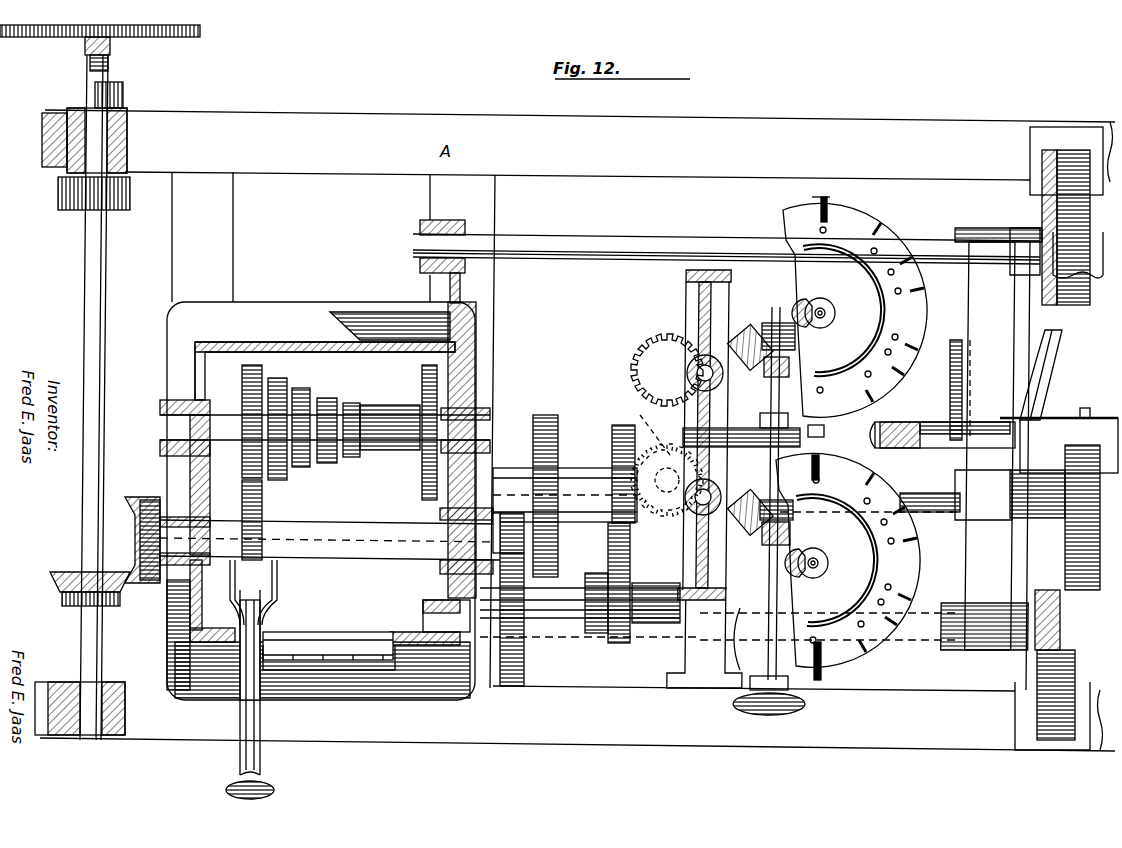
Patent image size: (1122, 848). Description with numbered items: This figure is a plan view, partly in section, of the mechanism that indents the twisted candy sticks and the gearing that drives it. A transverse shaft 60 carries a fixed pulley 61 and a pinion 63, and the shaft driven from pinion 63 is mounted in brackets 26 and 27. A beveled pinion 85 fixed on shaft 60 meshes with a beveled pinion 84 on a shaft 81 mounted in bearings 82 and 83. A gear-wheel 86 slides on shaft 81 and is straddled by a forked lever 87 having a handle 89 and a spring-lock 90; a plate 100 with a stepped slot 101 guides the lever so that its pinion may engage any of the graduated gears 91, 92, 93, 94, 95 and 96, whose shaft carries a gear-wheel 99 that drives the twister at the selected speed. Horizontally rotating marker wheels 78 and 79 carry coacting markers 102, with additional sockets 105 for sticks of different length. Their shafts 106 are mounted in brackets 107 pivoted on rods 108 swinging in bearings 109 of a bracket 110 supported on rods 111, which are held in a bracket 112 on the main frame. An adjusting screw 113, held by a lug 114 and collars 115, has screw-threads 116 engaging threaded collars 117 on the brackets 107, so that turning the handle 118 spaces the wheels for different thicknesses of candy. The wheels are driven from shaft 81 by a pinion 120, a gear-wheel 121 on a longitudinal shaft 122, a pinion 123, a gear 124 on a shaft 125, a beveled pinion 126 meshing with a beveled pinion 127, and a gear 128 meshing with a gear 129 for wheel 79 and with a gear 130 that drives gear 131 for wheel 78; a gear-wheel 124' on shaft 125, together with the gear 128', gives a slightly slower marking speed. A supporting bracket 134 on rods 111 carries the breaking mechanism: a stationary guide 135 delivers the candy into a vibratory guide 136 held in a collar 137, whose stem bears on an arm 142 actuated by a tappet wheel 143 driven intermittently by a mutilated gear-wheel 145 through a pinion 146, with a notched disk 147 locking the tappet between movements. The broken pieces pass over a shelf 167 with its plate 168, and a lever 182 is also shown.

The bracket 26 is at (127, 133).
The bracket 27 is at (125, 712).
The transverse shaft 60 is at (84, 330).
The fixed pulley 61 is at (160, 37).
The pinion 63 is at (60, 195).
The marker wheel 78 is at (855, 310).
The marker wheel 79 is at (543, 501).
The shaft 81 is at (355, 545).
The bearing 82 is at (440, 568).
The bearing 83 is at (178, 515).
The beveled pinion 84 is at (148, 497).
The beveled pinion 85 is at (118, 600).
The gear-wheel 86 is at (255, 520).
The lever 87 is at (277, 595).
The handle 89 is at (260, 722).
The spring-lock 90 is at (266, 782).
The gear 91 is at (390, 420).
The gear 92 is at (360, 406).
The gear 93 is at (335, 400).
The gear 94 is at (308, 390).
The gear 95 is at (285, 380).
The gear 96 is at (262, 370).
The gear-wheel 99 is at (425, 470).
The plate 100 is at (393, 667).
The stepped slot 101 is at (330, 655).
The markers 102 is at (830, 200).
The additional sockets 105 is at (885, 235).
The shafts 106 is at (835, 316).
The brackets 107 is at (822, 308).
The rods 108 is at (692, 370).
The bearings 109 is at (698, 380).
The bracket 110 is at (690, 296).
The rods 111 is at (700, 230).
The bracket 112 is at (1056, 216).
The adjusting screw 113 is at (810, 490).
The lug 114 is at (741, 430).
The collars 115 is at (812, 432).
The screw-threads 116 is at (774, 325).
The threaded collars 117 is at (808, 300).
The handle 118 is at (766, 715).
The pinion 120 is at (513, 520).
The gear-wheel 121 is at (524, 655).
The longitudinal shaft 122 is at (555, 605).
The pinion 123 is at (618, 645).
The gear 124 is at (605, 474).
The gear-wheel 124' is at (556, 478).
The shaft 125 is at (918, 493).
The beveled pinion 126 is at (570, 525).
The beveled pinion 127 is at (637, 427).
The gear 128 is at (667, 511).
The gear 128' is at (597, 627).
The gear 129 is at (741, 639).
The gear 130 is at (648, 345).
The gear 131 is at (770, 325).
The supporting bracket 134 is at (991, 439).
The stationary guide 135 is at (893, 440).
The vibratory guide 136 is at (985, 450).
The collar 137 is at (972, 415).
The arm 142 is at (948, 375).
The tappet wheel 143 is at (965, 515).
The mutilated gear-wheel 145 is at (1059, 670).
The pinion 146 is at (1098, 405).
The disk 147 is at (1065, 535).
The shelf or table 167 is at (1052, 432).
The plate 168 is at (1062, 412).
The lever 182 is at (1050, 372).